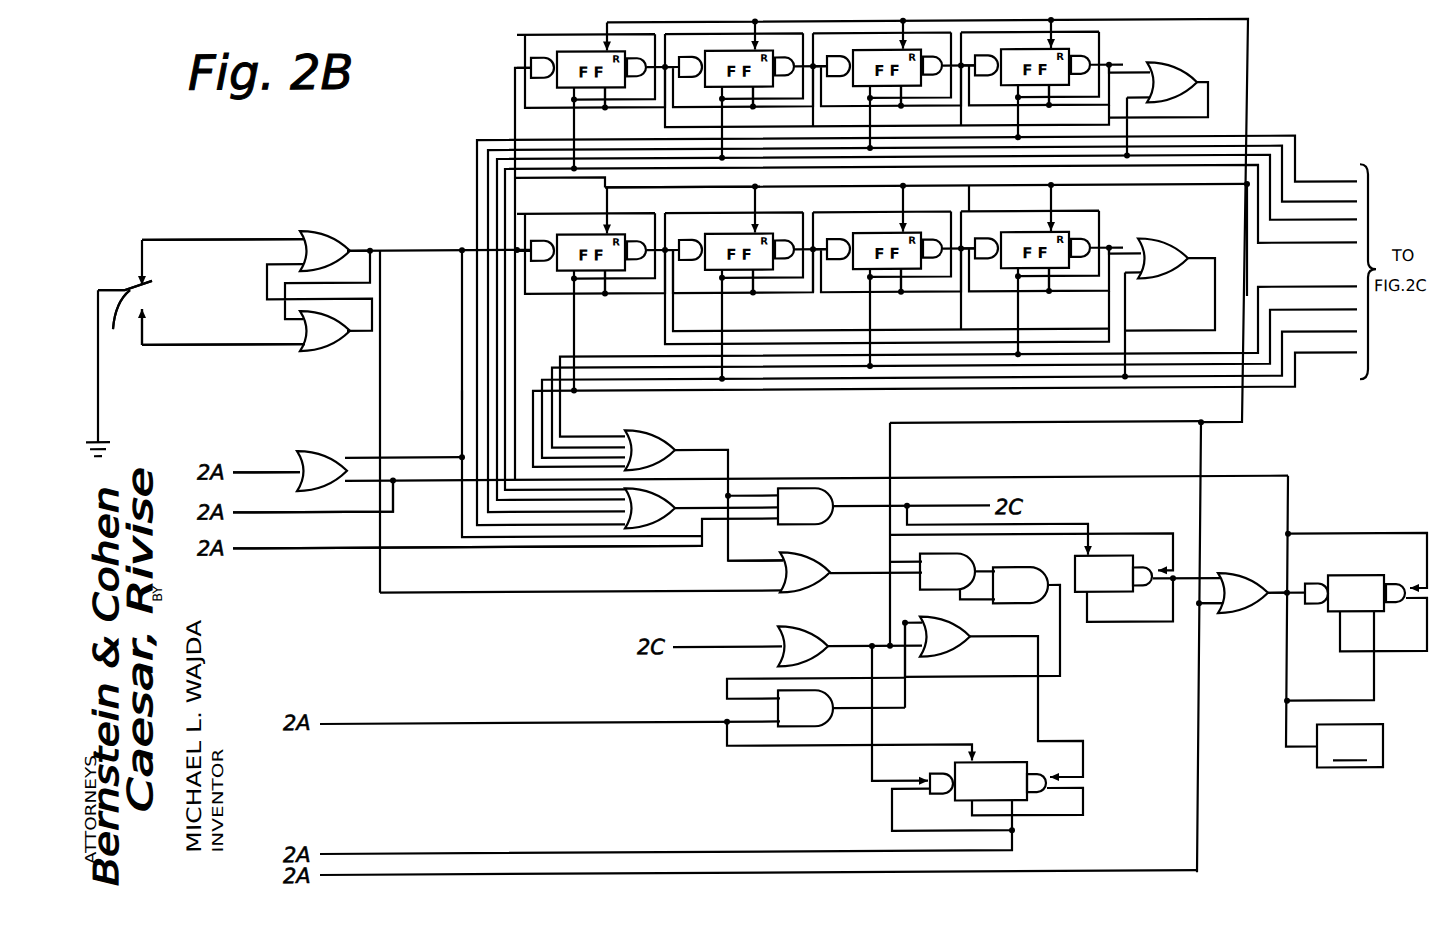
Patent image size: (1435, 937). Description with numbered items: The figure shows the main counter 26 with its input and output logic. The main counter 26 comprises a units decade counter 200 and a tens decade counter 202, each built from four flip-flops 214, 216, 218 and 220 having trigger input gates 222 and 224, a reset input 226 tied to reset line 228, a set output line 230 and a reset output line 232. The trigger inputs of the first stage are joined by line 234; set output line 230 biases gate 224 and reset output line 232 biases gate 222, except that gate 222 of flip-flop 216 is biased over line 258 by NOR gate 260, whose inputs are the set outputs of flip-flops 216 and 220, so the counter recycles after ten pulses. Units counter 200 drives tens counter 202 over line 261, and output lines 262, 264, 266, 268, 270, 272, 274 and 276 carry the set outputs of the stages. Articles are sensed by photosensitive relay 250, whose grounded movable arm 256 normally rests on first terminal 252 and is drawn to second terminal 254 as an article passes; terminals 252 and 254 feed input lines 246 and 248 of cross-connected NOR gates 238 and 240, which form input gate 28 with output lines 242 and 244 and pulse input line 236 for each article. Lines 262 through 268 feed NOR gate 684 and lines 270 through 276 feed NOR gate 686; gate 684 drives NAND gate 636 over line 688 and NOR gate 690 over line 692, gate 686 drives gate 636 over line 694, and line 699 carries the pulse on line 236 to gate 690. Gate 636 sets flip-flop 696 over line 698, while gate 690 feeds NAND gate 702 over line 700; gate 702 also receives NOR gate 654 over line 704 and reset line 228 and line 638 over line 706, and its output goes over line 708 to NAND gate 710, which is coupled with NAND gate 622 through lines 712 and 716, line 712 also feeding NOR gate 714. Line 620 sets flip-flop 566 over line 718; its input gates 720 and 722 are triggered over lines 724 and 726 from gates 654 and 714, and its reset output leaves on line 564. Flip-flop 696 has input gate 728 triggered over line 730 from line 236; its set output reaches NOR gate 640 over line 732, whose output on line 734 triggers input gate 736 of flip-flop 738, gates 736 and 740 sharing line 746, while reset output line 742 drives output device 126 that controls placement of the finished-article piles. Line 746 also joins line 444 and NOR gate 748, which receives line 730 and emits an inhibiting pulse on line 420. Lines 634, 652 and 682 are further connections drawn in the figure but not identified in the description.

The main counter 26 is at (478, 123).
The input gate 28 is at (372, 212).
The output device 126 is at (1334, 621).
The units decade counter 200 is at (588, 209).
The tens decade counter 202 is at (590, 23).
The flip-flop FF 214 is at (628, 236).
The flip-flop FF 216 is at (740, 237).
The flip-flop FF 218 is at (928, 66).
The flip-flop FF 220 is at (1052, 56).
The trigger input gate 222 is at (533, 66).
The trigger input gate 224 is at (634, 60).
The reset input 226 is at (605, 200).
The reset line 228 is at (1160, 189).
The set output line 230 is at (578, 130).
The reset output line 232 is at (610, 110).
The line 234 is at (666, 216).
The input line 236 is at (402, 249).
The NOR gate 238 is at (317, 232).
The NOR gate 240 is at (325, 346).
The output line 242 is at (270, 284).
The output line 244 is at (380, 278).
The input line 246 is at (214, 238).
The input line 248 is at (204, 344).
The photosensitive relay 250 is at (117, 276).
The first terminal 252 is at (146, 283).
The second terminal 254 is at (147, 310).
The movable arm 256 is at (118, 321).
The line 258 is at (985, 337).
The NOR gate 260 is at (1172, 79).
The line 261 is at (975, 205).
The output line 262 is at (945, 397).
The output line 264 is at (949, 381).
The output line 266 is at (954, 365).
The output line 268 is at (958, 348).
The output line 270 is at (931, 327).
The output line 272 is at (927, 327).
The output line 274 is at (922, 328).
The output line 276 is at (917, 330).
The line 420 is at (265, 470).
The line 444 is at (300, 512).
The line 564 is at (525, 853).
The flip-flop FF 566 is at (990, 765).
The line 620 is at (600, 725).
The NAND gate 622 is at (815, 718).
The input line 634 is at (288, 548).
The NAND gate 636 is at (832, 508).
The line 638 is at (595, 875).
The NOR gate 640 is at (1240, 616).
The input line 652 is at (745, 647).
The NOR gate 654 is at (790, 638).
The line 682 is at (975, 507).
The NOR gate 684 is at (650, 436).
The NOR gate 686 is at (676, 501).
The line 688 is at (712, 452).
The NOR gate 690 is at (797, 593).
The line 692 is at (727, 562).
The line 694 is at (750, 496).
The flip-flop FF 696 is at (1118, 568).
The line 698 is at (1066, 527).
The line 699 is at (515, 596).
The line 700 is at (850, 575).
The NAND gate 702 is at (966, 606).
The line 704 is at (890, 599).
The line 706 is at (890, 449).
The line 708 is at (975, 573).
The NAND gate 710 is at (1030, 580).
The line 712 is at (906, 696).
The NOR gate 714 is at (958, 642).
The line 716 is at (727, 690).
The line 718 is at (950, 748).
The input gate 720 is at (940, 796).
The input gate 722 is at (1045, 781).
The line 724 is at (871, 769).
The line 726 is at (1040, 720).
The input gate 728 is at (1150, 588).
The line 730 is at (461, 391).
The line 732 is at (1213, 572).
The line 734 is at (1266, 593).
The input gate 736 is at (1315, 588).
The flip-flop FF 738 is at (1372, 581).
The input gate 740 is at (1402, 608).
The reset output line 742 is at (1376, 703).
The line 746 is at (1386, 538).
The NOR gate 748 is at (326, 450).